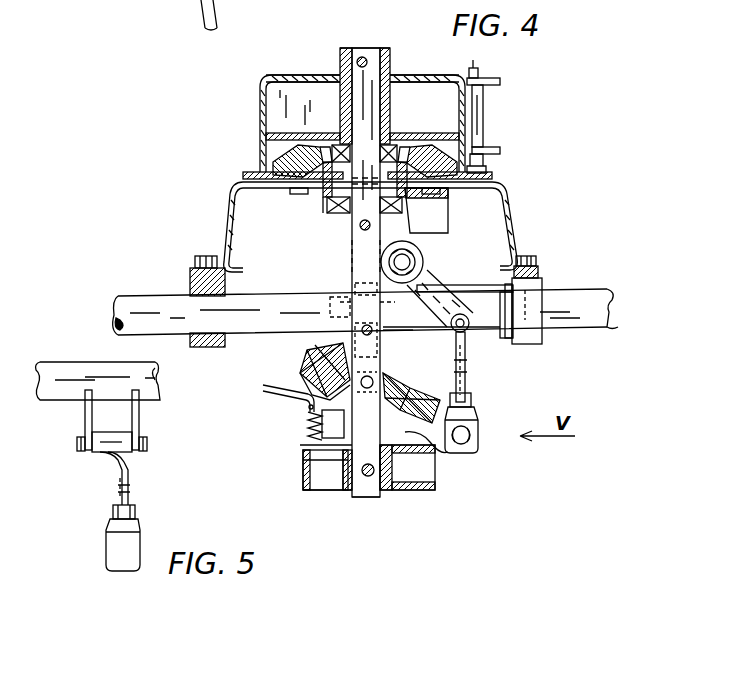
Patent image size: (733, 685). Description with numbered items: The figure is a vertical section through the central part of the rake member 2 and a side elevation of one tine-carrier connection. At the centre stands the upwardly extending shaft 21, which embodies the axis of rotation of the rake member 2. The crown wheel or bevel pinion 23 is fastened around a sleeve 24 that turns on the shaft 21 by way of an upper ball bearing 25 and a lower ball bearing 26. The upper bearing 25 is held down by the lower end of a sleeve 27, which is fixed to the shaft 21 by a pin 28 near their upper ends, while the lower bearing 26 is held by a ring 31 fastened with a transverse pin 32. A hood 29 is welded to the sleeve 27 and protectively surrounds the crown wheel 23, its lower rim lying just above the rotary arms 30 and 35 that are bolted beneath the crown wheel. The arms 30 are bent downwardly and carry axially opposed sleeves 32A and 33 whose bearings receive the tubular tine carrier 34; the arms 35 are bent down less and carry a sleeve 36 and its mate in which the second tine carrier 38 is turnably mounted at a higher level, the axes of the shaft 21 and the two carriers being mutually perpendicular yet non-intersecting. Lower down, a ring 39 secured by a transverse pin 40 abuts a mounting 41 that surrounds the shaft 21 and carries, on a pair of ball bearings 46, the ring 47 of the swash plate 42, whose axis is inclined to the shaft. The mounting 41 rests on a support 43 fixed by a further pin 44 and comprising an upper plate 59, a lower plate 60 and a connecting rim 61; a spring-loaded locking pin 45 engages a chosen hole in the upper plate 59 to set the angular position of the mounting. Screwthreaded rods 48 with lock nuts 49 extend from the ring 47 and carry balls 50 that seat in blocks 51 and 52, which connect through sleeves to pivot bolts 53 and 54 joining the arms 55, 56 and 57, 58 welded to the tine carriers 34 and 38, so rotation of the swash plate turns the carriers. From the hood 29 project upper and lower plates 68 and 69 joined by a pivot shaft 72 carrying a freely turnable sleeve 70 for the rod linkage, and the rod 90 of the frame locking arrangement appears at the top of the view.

In FIG. 4, the rake member 2 is at (533, 245).
In FIG. 4, the upwardly extending shaft 21 is at (372, 56).
In FIG. 4, the crown wheel or bevel pinion 23 is at (367, 200).
In FIG. 4, the sleeve 24 is at (418, 150).
In FIG. 4, the upper ball bearing 25 is at (405, 150).
In FIG. 4, the lower ball bearing 26 is at (322, 212).
In FIG. 4, the sleeve 27 is at (340, 52).
In FIG. 4, the pin 28 is at (363, 57).
In FIG. 4, the hood 29 is at (260, 96).
In FIG. 4, the arms 30 is at (233, 212).
In FIG. 4, the ring 31 is at (345, 229).
In FIG. 4, the transverse pin 32 is at (350, 240).
In FIG. 4, the sleeve 32A is at (528, 298).
In FIG. 4, the sleeve 33 is at (210, 347).
In FIG. 4, the tine carrier 34 is at (160, 296).
In FIG. 4, the arms 35 is at (435, 206).
In FIG. 4, the sleeve 36 is at (424, 250).
In FIG. 4, the second tine carrier 38 is at (416, 263).
In FIG. 5, the second tine carrier 38 is at (66, 350).
In FIG. 4, the ring 39 is at (385, 333).
In FIG. 4, the transverse pin 40 is at (328, 336).
In FIG. 4, the mounting 41 is at (442, 445).
In FIG. 4, the swash plate 42 is at (297, 357).
In FIG. 4, the support 43 is at (294, 462).
In FIG. 4, the transverse pin 44 is at (363, 480).
In FIG. 4, the spring-loaded locking pin 45 is at (262, 390).
In FIG. 4, the ball bearings 46 is at (415, 398).
In FIG. 4, the ring 47 is at (466, 380).
In FIG. 4, the externally screwthreaded rod 48 is at (460, 455).
In FIG. 4, the lock nut 49 is at (472, 402).
In FIG. 4, the ball 50 is at (480, 422).
In FIG. 4, the block 51 is at (480, 442).
In FIG. 5, the block 51 is at (107, 541).
In FIG. 4, the block 52 is at (308, 406).
In FIG. 4, the pivot bolt 53 is at (470, 332).
In FIG. 5, the pivot bolt 53 is at (76, 445).
In FIG. 4, the pivot bolt 54 is at (338, 303).
In FIG. 4, the arm 55 is at (445, 295).
In FIG. 5, the arm 55 is at (84, 418).
In FIG. 5, the arm 56 is at (140, 420).
In FIG. 4, the arm 57 is at (355, 287).
In FIG. 4, the arm 58 is at (340, 287).
In FIG. 4, the upper plate 59 is at (318, 464).
In FIG. 4, the lower plate 60 is at (315, 492).
In FIG. 4, the rim 61 is at (437, 491).
In FIG. 4, the upper plate 68 is at (500, 81).
In FIG. 4, the lower plate 69 is at (496, 148).
In FIG. 4, the sleeve 70 is at (484, 110).
In FIG. 4, the pivot shaft 72 is at (475, 63).
In FIG. 4, the rod 90 is at (200, 11).